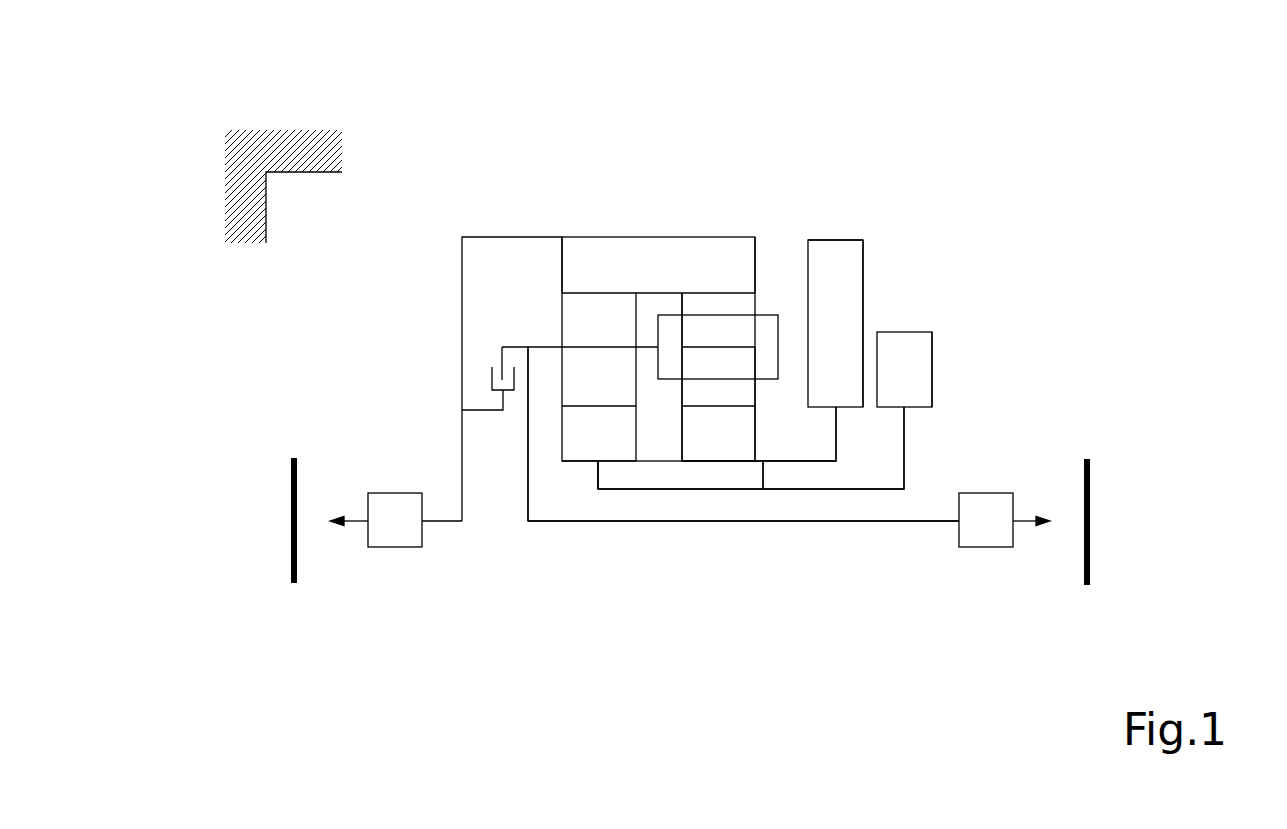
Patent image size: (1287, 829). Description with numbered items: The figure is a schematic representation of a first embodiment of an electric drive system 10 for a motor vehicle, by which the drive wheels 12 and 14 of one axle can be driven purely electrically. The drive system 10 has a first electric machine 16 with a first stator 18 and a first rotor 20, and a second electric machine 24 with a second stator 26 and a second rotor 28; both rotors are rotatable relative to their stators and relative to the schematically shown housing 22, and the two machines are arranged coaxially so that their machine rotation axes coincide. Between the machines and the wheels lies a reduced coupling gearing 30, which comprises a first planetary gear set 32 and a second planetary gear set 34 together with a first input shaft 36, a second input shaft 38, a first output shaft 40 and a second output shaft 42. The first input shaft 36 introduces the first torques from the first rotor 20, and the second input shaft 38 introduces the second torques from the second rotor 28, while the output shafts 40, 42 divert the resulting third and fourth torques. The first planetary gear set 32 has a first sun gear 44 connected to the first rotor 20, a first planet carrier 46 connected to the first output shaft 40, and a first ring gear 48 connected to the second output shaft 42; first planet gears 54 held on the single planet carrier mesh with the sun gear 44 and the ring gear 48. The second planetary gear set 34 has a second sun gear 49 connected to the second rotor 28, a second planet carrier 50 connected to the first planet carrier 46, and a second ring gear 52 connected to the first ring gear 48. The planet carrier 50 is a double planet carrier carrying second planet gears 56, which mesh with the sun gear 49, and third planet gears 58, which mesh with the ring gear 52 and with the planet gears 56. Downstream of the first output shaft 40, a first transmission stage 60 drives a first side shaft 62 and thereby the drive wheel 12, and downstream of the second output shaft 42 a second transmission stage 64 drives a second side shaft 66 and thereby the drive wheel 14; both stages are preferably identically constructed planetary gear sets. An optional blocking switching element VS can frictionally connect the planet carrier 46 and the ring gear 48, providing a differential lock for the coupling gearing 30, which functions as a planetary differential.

The electric drive system 10 is at (874, 248).
The drive wheel 12 is at (1090, 500).
The drive wheel 14 is at (292, 473).
The first electric machine 16 is at (933, 318).
The first stator 18 is at (933, 365).
The first rotor 20 is at (863, 488).
The housing 22 is at (328, 152).
The second electric machine 24 is at (841, 226).
The second stator 26 is at (823, 240).
The second rotor 28 is at (800, 462).
The reduced coupling gearing 30 is at (685, 223).
The first planetary gear set 32 is at (586, 481).
The second planetary gear set 34 is at (710, 479).
The first input shaft 36 is at (662, 490).
The second input shaft 38 is at (763, 492).
The first output shaft 40 is at (932, 522).
The second output shaft 42 is at (447, 522).
The first sun gear 44 is at (573, 463).
The first planet carrier 46 is at (547, 347).
The first ring gear 48 is at (580, 245).
The second sun gear 49 is at (695, 418).
The second planet carrier 50 is at (762, 317).
The second ring gear 52 is at (732, 245).
The first planet gears 54 is at (560, 380).
The second planet gears 56 is at (756, 394).
The third planet gears 58 is at (678, 308).
The first transmission stage 60 is at (977, 548).
The first side shaft 62 is at (1022, 522).
The second transmission stage 64 is at (402, 548).
The second side shaft 66 is at (357, 522).
The blocking switching element VS is at (476, 360).